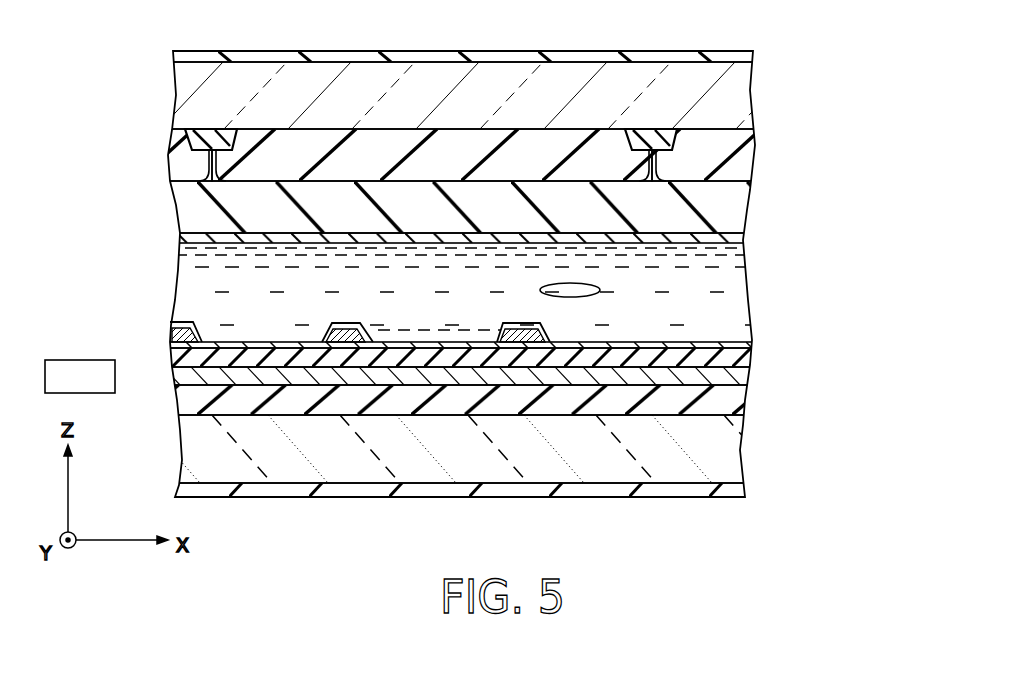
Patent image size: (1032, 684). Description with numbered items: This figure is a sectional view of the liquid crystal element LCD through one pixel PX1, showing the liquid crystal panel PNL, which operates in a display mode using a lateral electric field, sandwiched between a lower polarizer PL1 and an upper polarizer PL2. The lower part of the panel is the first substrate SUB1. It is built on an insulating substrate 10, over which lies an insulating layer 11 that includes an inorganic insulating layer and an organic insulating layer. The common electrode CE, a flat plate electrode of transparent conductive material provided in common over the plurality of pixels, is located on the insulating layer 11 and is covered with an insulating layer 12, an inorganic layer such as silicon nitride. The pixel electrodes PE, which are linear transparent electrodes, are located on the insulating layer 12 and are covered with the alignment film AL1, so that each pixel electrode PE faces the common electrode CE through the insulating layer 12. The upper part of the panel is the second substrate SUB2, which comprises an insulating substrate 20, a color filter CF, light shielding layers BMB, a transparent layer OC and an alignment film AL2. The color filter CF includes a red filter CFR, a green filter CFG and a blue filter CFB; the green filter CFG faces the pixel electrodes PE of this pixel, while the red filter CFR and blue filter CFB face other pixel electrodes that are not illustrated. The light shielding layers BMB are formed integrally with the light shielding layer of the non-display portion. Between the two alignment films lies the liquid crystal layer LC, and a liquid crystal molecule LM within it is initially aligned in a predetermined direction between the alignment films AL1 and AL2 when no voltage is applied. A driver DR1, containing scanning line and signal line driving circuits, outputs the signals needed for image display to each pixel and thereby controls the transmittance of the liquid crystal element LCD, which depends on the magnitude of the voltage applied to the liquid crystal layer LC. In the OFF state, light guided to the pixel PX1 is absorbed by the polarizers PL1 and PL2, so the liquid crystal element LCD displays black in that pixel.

The liquid crystal element LCD is at (483, 254).
The liquid crystal panel PNL is at (468, 254).
The polarizer PL2 is at (752, 57).
The insulating substrate 20 is at (745, 88).
The second substrate SUB2 is at (480, 127).
The color filter CF is at (451, 94).
The red filter CFR is at (166, 152).
The green filter CFG is at (377, 150).
The blue filter CFB is at (752, 135).
The light shielding layers BMB is at (215, 140).
The transparent layer OC is at (745, 207).
The alignment film AL2 is at (745, 238).
The liquid crystal layer LC is at (482, 289).
The liquid crystal molecule LM is at (596, 284).
The pixel electrodes PE is at (503, 322).
The alignment film AL1 is at (748, 341).
The insulating layer 12 is at (745, 357).
The common electrode CE is at (748, 376).
The insulating layer 11 is at (745, 403).
The first substrate SUB1 is at (515, 376).
The insulating substrate 10 is at (745, 452).
The polarizer PL1 is at (745, 490).
The pixel PX1 is at (451, 436).
The driver DR1 is at (162, 378).